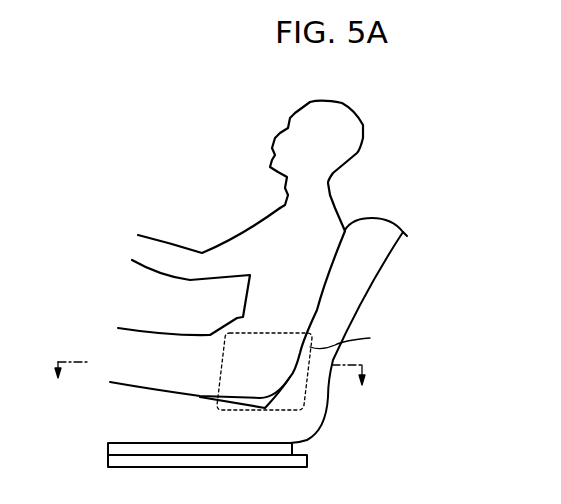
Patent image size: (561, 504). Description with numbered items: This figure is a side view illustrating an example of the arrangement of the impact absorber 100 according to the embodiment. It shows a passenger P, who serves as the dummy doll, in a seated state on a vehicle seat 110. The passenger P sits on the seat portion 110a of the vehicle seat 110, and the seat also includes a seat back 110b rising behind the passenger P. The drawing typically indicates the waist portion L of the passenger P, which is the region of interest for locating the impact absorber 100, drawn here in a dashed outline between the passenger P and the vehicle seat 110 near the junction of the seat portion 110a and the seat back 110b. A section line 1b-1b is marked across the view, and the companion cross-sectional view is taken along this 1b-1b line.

The passenger P is at (359, 114).
The vehicle seat 110 is at (256, 342).
The seat portion 110a is at (162, 420).
The seat back 110b is at (358, 285).
The impact absorber 100 is at (232, 372).
The waist portion L is at (349, 335).
The 1b-1b line 1b is at (213, 370).